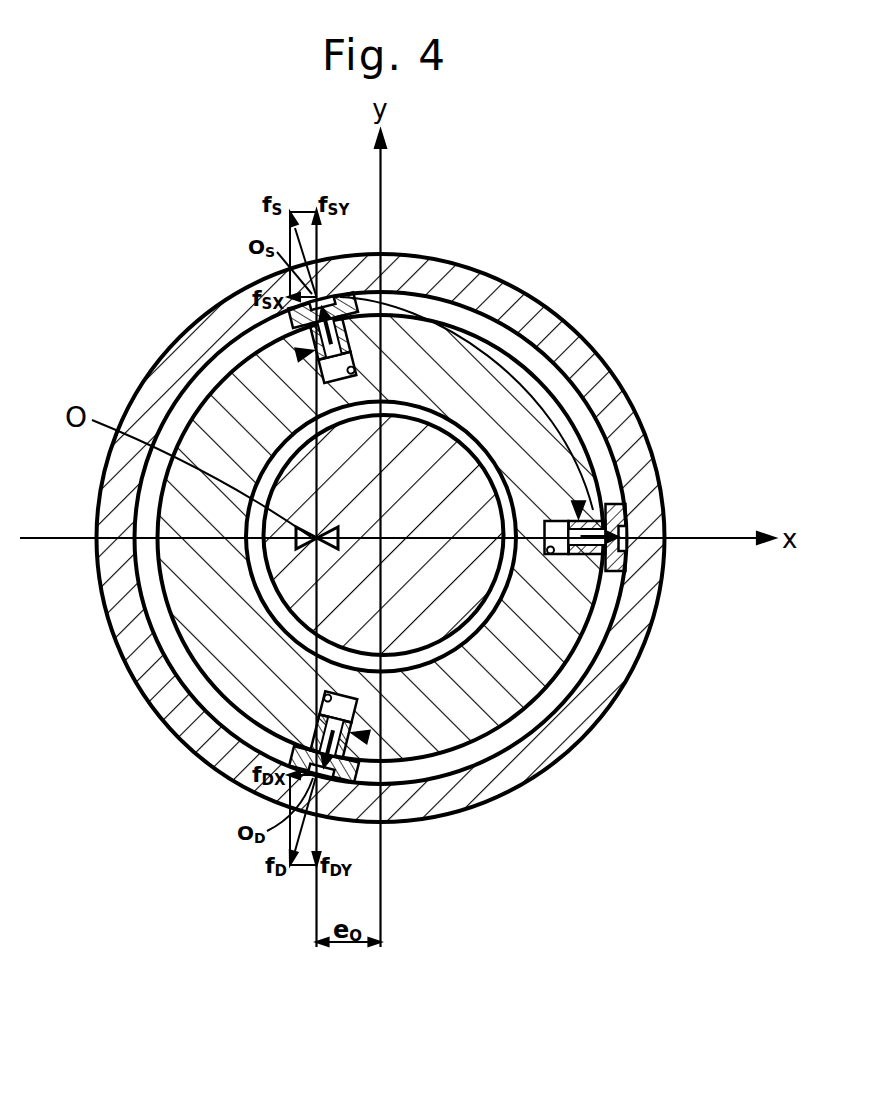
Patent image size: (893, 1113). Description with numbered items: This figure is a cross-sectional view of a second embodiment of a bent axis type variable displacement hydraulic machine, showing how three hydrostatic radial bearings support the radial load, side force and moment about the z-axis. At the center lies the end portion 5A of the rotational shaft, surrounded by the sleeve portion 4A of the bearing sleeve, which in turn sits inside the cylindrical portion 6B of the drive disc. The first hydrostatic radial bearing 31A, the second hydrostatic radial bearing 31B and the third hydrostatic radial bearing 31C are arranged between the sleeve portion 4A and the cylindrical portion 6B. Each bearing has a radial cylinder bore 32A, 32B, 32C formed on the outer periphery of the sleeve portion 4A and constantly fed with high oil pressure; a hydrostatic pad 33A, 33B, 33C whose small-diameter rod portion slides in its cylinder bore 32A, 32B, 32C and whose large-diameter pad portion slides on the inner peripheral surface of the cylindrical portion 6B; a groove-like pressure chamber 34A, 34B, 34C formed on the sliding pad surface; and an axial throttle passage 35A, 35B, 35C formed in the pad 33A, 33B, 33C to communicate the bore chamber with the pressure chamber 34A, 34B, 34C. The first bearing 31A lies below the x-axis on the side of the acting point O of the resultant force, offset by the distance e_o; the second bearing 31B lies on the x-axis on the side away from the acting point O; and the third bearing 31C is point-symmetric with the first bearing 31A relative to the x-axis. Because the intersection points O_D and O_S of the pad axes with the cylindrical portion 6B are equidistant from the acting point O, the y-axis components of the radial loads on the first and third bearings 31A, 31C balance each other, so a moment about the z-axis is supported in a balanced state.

The cylindrical portion 6B is at (585, 372).
The sleeve portion 4A is at (188, 597).
The end portion of rotational shaft 5A is at (473, 587).
The first hydrostatic radial bearing 31A is at (368, 737).
The second hydrostatic radial bearing 31B is at (579, 500).
The third hydrostatic radial bearing 31C is at (288, 343).
The radial cylinder bore 32A is at (308, 706).
The radial cylinder bore 32B is at (620, 568).
The radial cylinder bore 32C is at (458, 305).
The hydrostatic pad 33A is at (345, 778).
The hydrostatic pad 33B is at (612, 502).
The hydrostatic pad 33C is at (333, 298).
The pressure chamber 34A is at (352, 772).
The pressure chamber 34B is at (623, 548).
The pressure chamber 34C is at (303, 330).
The axial throttle passage 35A is at (305, 733).
The axial throttle passage 35B is at (624, 526).
The axial throttle passage 35C is at (343, 291).